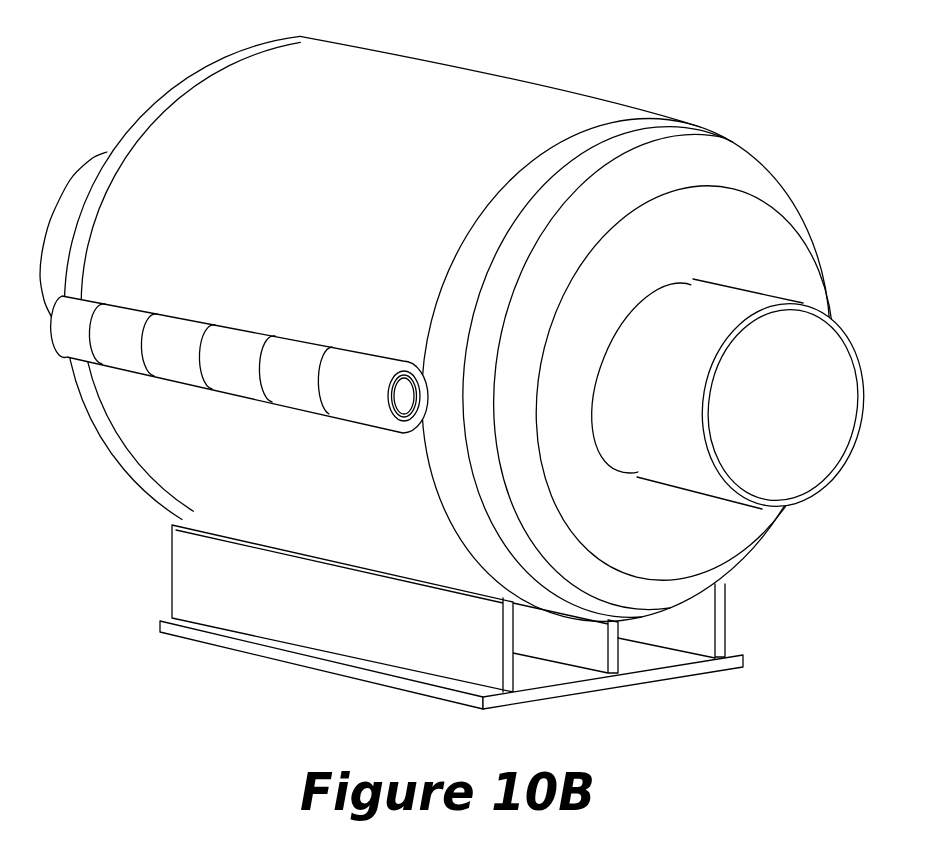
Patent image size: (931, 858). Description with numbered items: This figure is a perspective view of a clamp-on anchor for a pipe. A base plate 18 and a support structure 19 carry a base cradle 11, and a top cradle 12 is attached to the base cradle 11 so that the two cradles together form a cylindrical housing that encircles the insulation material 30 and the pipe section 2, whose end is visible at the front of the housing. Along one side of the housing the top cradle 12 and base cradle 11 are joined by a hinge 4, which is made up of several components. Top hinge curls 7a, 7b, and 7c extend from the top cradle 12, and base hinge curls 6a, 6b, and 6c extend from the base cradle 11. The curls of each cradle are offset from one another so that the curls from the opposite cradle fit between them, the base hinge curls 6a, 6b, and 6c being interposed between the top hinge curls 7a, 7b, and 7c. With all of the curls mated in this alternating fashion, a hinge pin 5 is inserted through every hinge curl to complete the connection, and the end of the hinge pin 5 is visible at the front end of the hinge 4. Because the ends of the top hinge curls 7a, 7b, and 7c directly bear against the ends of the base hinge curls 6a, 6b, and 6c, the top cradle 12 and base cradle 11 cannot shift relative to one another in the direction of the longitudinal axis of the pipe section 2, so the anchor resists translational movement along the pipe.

The pipe section 2 is at (803, 472).
The hinge 4 is at (52, 280).
The hinge pin 5 is at (408, 397).
The base hinge curl 6a is at (300, 387).
The base hinge curl 6b is at (187, 358).
The base hinge curl 6c is at (63, 332).
The top hinge curl 7a is at (365, 368).
The top hinge curl 7b is at (248, 338).
The top hinge curl 7c is at (133, 312).
The base cradle 11 is at (338, 523).
The top cradle 12 is at (477, 102).
The base plate 18 is at (158, 624).
The support structure 19 is at (178, 563).
The insulation material 30 is at (770, 193).